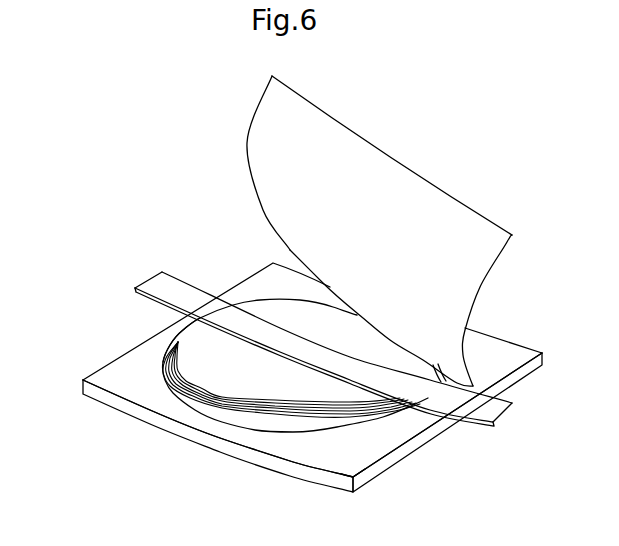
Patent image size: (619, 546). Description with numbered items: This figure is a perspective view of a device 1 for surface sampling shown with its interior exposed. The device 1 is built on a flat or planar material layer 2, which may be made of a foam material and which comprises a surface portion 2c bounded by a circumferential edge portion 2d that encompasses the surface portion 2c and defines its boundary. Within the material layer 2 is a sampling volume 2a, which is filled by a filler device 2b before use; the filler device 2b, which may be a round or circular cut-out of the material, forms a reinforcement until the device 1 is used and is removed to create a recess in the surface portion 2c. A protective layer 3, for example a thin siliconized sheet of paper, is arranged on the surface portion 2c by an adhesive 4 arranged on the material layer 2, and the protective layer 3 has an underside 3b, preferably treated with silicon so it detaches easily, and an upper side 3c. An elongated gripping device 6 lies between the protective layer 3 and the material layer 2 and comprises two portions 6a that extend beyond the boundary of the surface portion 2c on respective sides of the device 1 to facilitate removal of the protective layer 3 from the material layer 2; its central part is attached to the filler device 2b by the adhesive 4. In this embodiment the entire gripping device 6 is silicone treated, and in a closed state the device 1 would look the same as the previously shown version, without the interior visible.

The device for surface sampling 1 is at (185, 190).
The material layer 2 is at (140, 403).
The sampling volume 2a is at (227, 407).
The filler device 2b is at (217, 342).
The surface portion 2c is at (232, 412).
The circumferential edge portion 2d is at (313, 477).
The protective layer 3 is at (390, 158).
The underside of the protective layer 3b is at (283, 128).
The upper side of the protective layer 3c is at (495, 352).
The adhesive 4 is at (354, 478).
The elongated gripping device 6 is at (172, 292).
The portions extending beyond the boundary of the surface portion 6a is at (183, 292).